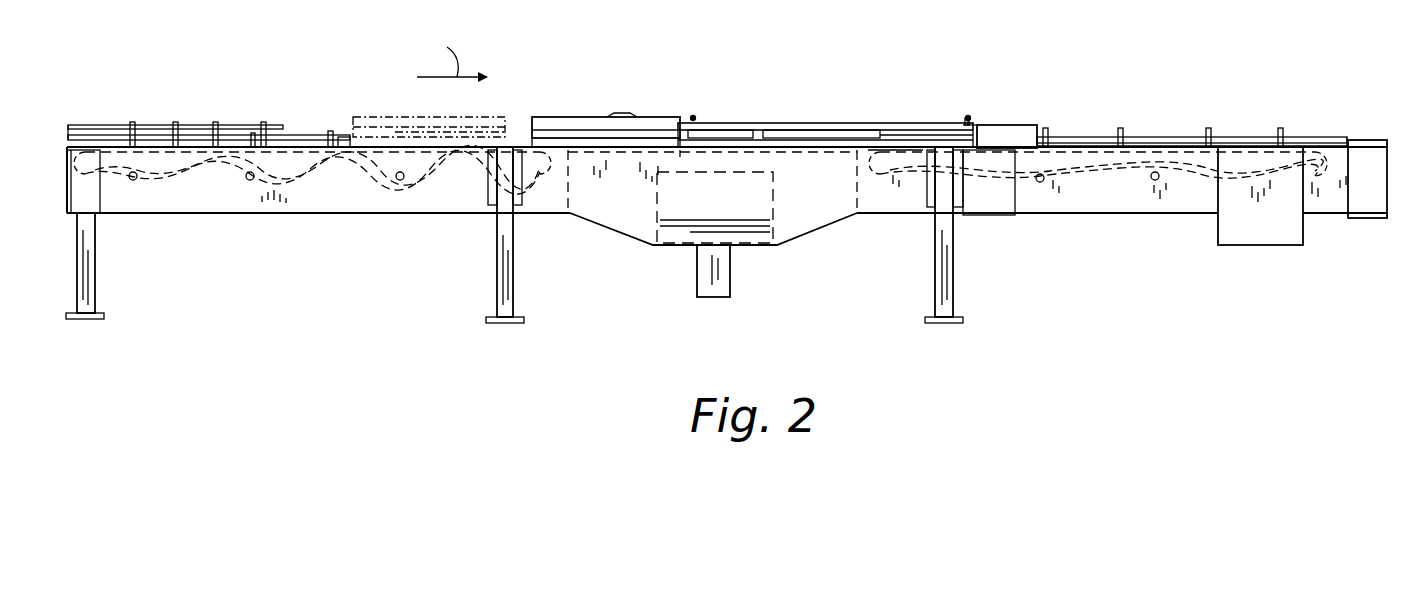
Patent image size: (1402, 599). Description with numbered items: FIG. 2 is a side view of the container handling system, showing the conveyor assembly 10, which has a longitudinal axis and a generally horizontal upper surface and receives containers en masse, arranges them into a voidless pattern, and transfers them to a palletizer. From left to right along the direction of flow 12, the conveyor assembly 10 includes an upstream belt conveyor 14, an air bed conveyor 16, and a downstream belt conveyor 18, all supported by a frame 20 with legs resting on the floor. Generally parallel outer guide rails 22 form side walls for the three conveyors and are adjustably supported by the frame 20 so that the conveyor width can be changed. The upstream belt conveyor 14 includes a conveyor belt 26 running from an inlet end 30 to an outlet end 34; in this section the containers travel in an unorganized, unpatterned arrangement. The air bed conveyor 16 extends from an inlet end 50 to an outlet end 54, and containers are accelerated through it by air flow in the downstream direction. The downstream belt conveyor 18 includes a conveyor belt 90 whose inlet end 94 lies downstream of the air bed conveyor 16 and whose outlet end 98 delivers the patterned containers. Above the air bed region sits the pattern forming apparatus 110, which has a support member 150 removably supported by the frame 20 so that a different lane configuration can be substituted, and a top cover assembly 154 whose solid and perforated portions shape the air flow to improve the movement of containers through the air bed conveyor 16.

The conveyor assembly 10 is at (513, 37).
The direction of flow 12 is at (452, 59).
The upstream belt conveyor 14 is at (318, 108).
The air bed conveyor 16 is at (704, 110).
The downstream belt conveyor 18 is at (1100, 115).
The frame 20 is at (87, 290).
The outer guide rails 22 is at (195, 122).
The conveyor belt 26 is at (195, 178).
The inlet end 30 is at (112, 113).
The outlet end 34 is at (513, 123).
The inlet end 50 is at (578, 153).
The outlet end 54 is at (853, 152).
The conveyor belt 90 is at (1108, 182).
The inlet end 94 is at (897, 147).
The outlet end 98 is at (1308, 132).
The pattern forming apparatus 110 is at (843, 118).
The support member 150 is at (747, 123).
The top cover assembly 154 is at (377, 113).